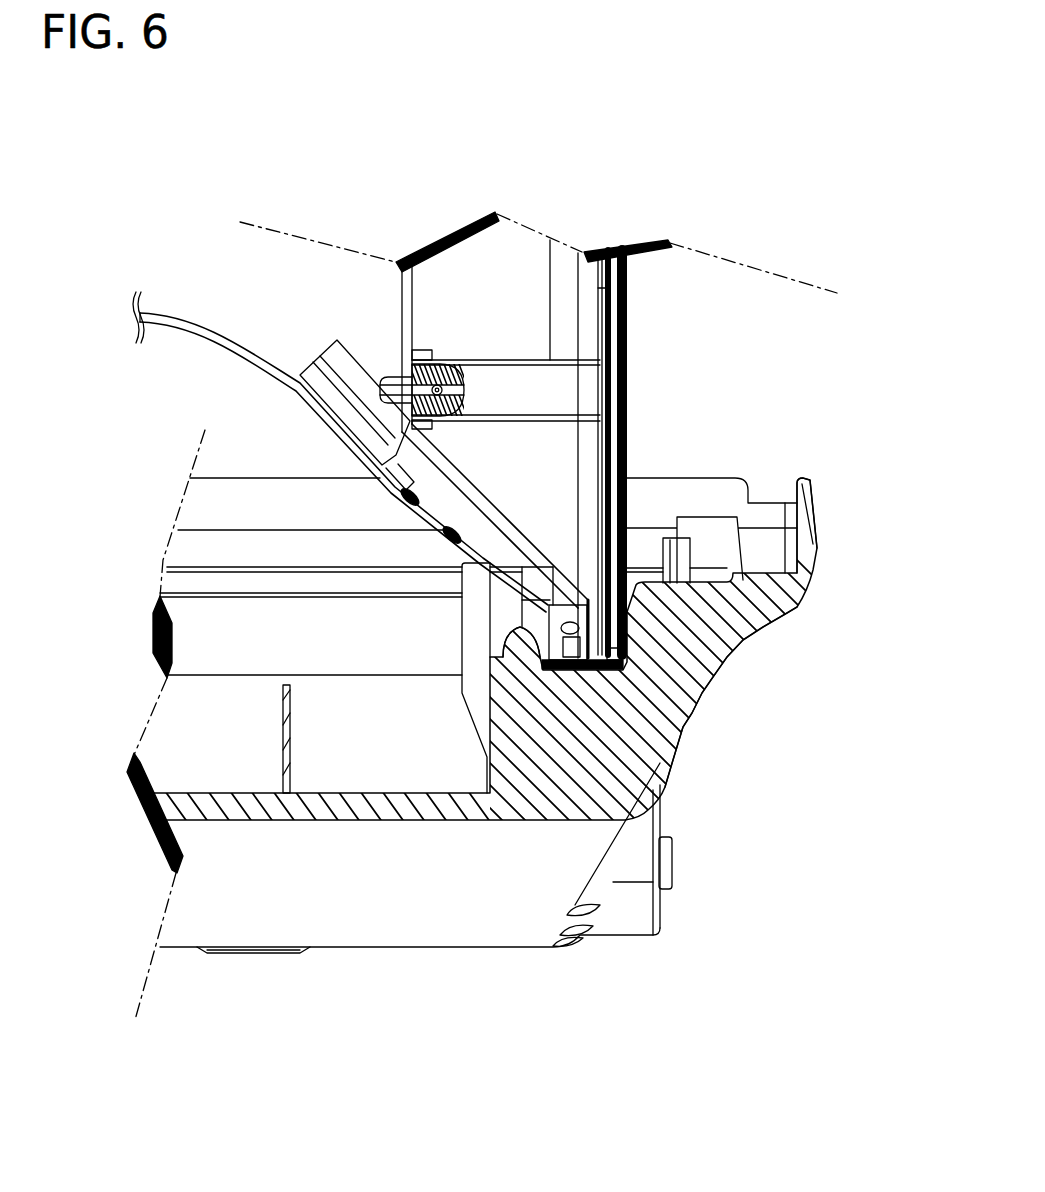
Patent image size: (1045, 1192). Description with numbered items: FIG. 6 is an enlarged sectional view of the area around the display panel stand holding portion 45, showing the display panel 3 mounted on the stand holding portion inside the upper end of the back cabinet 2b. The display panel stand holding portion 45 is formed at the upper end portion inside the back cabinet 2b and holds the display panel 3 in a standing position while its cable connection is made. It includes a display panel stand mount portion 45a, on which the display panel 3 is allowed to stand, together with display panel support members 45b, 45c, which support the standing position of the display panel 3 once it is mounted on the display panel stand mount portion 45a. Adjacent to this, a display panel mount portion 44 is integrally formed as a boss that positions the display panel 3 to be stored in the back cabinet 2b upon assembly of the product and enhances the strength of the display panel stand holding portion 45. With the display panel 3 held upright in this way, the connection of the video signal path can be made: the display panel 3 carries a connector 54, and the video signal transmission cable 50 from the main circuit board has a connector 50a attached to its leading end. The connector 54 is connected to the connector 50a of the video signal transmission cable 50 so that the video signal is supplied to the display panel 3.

The back cabinet 2b is at (817, 553).
The display panel 3 is at (632, 361).
The display panel mount portion 44 is at (480, 619).
The display panel stand holding portion 45 is at (583, 820).
The display panel stand mount portion 45a is at (567, 735).
The display panel support member 45b is at (522, 632).
The display panel support member 45c is at (640, 622).
The video signal transmission cable 50 is at (232, 338).
The connector 50a is at (333, 442).
The connector 54 is at (386, 455).